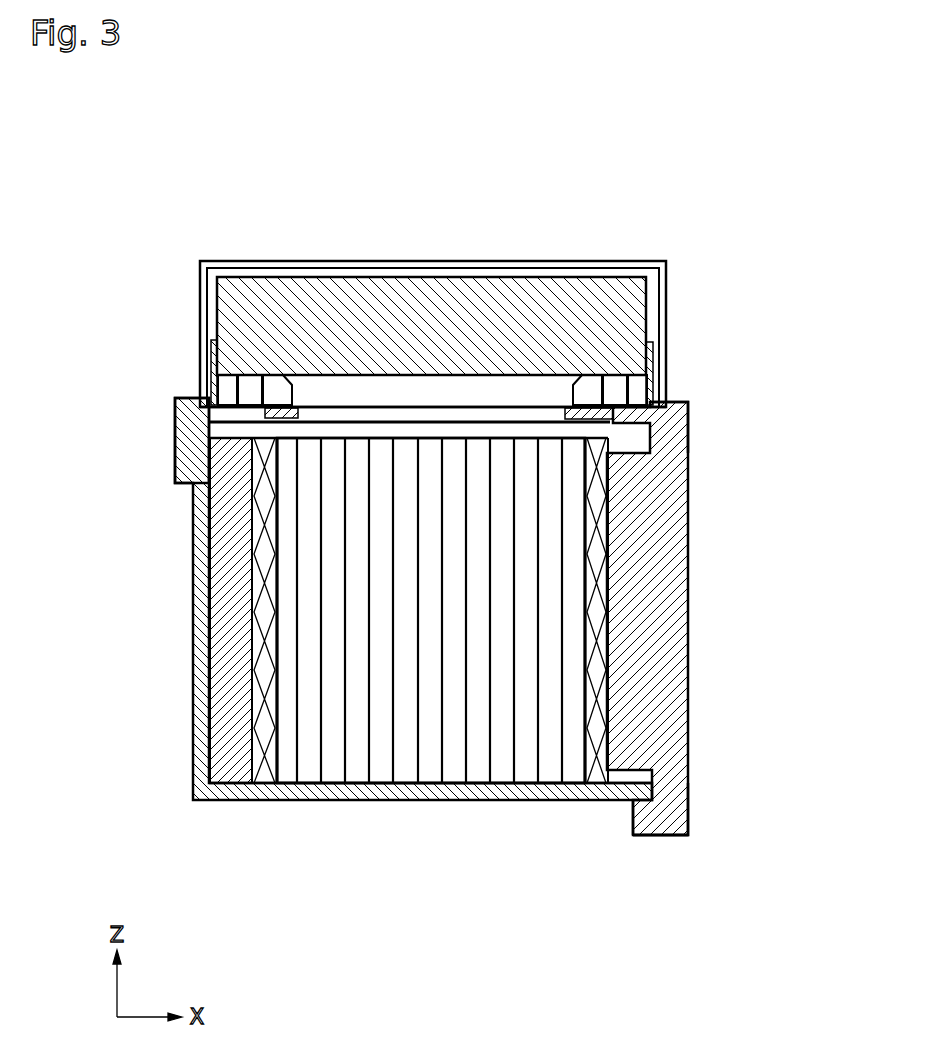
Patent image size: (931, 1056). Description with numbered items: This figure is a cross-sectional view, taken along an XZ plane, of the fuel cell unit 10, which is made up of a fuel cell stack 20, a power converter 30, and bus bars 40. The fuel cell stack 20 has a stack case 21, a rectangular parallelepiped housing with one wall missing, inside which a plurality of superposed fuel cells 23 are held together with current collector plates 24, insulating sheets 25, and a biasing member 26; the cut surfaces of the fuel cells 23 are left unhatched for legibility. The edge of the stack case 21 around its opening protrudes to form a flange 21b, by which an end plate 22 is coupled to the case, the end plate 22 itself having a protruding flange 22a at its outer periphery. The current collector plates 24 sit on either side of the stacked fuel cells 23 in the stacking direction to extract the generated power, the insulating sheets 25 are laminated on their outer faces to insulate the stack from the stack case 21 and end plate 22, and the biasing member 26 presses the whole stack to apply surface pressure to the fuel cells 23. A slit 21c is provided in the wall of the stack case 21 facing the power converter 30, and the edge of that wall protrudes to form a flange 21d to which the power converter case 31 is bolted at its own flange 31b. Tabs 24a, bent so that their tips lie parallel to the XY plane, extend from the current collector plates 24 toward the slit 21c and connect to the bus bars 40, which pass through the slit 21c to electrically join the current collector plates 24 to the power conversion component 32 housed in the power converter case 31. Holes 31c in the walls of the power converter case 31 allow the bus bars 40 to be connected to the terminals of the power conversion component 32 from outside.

The fuel cell unit 10 is at (674, 144).
The fuel cell stack 20 is at (140, 573).
The stack case 21 is at (193, 632).
The flange 21b is at (640, 833).
The slit 21c is at (430, 420).
The flange 21d is at (175, 447).
The end plate 22 is at (717, 588).
The flange 22a is at (688, 425).
The fuel cells 23 is at (355, 770).
The current collector plates 24 is at (277, 785).
The tabs 24a is at (267, 423).
The insulating sheets 25 is at (257, 783).
The biasing member 26 is at (228, 785).
The power converter 30 is at (668, 219).
The power converter case 31 is at (268, 262).
The flange 31b is at (678, 400).
The holes 31c is at (199, 353).
The power conversion component 32 is at (612, 263).
The bus bars 40 is at (291, 370).